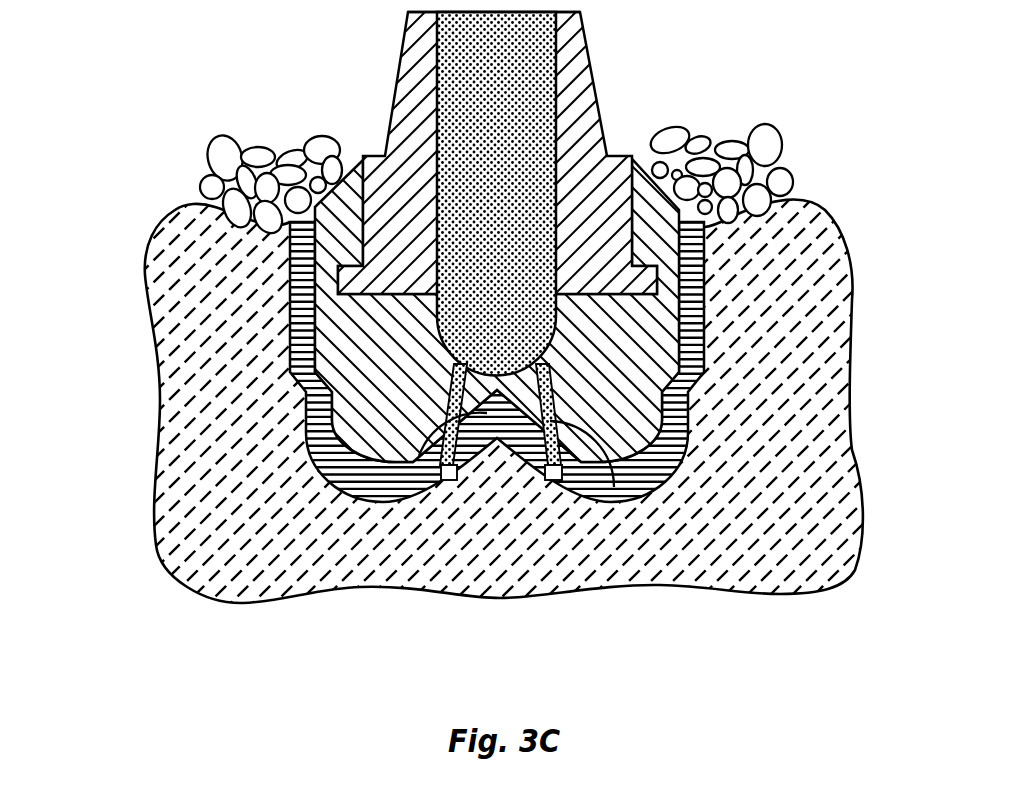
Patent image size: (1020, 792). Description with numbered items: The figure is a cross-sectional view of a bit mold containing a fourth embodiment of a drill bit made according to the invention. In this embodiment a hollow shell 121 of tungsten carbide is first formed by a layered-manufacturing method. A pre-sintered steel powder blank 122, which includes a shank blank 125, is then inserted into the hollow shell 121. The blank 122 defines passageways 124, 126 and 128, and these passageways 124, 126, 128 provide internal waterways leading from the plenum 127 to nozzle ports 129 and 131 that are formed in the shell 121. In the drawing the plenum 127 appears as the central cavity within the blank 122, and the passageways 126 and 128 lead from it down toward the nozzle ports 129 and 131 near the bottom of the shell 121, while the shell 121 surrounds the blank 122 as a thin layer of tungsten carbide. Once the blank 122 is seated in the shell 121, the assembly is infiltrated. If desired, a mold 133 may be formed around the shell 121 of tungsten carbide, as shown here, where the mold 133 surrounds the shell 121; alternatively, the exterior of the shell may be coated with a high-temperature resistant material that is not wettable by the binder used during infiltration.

The shell 121 is at (705, 284).
The pre-sintered steel powder blank 122 is at (658, 372).
The passageway 124 is at (556, 54).
The shank blank 125 is at (578, 13).
The passageway 126 is at (419, 457).
The plenum 127 is at (528, 116).
The passageway 128 is at (612, 490).
The nozzle port 129 is at (445, 481).
The nozzle port 131 is at (546, 481).
The mold 133 is at (178, 397).